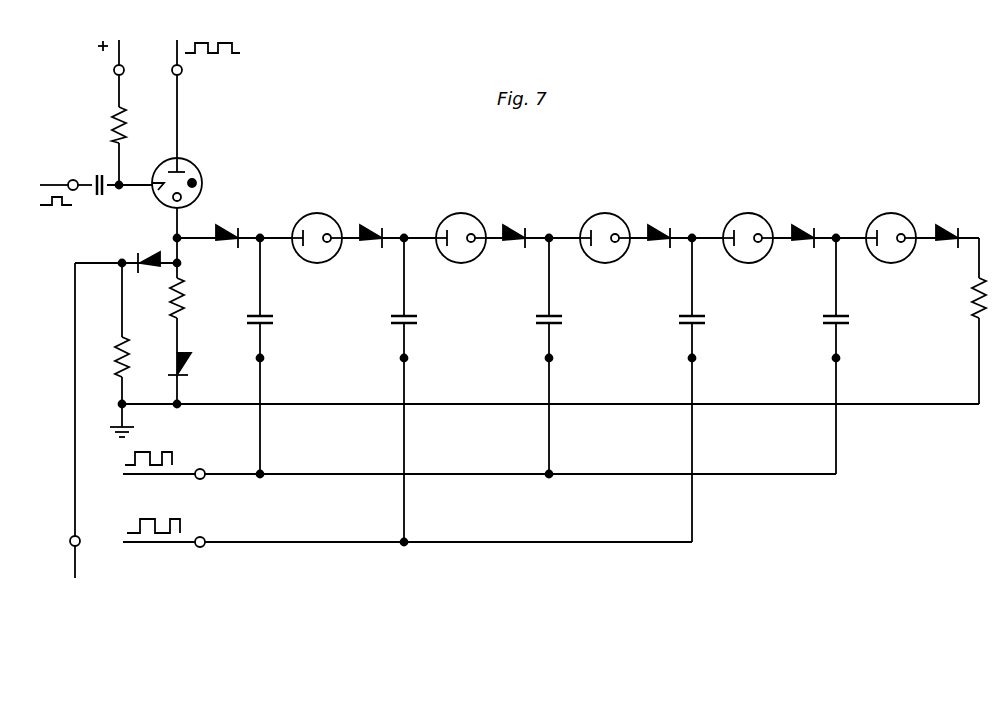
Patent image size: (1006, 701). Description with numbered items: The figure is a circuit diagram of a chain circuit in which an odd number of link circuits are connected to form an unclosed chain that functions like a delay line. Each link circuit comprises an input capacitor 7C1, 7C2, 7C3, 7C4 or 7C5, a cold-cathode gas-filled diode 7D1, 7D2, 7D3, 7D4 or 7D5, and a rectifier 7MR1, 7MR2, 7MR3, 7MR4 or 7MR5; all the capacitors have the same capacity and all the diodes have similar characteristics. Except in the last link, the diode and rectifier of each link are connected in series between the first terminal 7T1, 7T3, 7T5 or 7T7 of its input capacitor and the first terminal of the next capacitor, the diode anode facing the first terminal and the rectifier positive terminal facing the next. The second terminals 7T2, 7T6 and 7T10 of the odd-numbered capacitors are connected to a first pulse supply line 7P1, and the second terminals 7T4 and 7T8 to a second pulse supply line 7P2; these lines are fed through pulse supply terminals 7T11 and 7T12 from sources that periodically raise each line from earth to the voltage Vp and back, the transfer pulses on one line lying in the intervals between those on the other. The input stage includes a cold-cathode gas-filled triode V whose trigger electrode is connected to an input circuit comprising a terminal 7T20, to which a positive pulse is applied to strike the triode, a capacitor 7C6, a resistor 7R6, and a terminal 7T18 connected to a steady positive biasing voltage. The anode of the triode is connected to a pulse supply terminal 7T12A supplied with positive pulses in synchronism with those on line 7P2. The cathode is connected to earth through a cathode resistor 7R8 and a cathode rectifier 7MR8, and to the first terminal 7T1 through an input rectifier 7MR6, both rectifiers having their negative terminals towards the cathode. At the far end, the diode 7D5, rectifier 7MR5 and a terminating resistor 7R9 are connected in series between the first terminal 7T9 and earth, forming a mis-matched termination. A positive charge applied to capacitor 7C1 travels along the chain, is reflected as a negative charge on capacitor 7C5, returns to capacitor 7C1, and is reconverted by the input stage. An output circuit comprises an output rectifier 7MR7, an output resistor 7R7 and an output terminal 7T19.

The terminal 7T18 is at (114, 73).
The pulse supply terminal 7T12A is at (181, 74).
The resistor 7R6 is at (98, 125).
The terminal 7T20 is at (72, 180).
The capacitor 7C6 is at (102, 199).
The cold-cathode gas-filled triode V is at (194, 166).
The input rectifier 7MR6 is at (227, 224).
The output rectifier 7MR7 is at (137, 249).
The cathode resistor 7R8 is at (200, 298).
The cathode rectifier 7MR8 is at (208, 364).
The output resistor 7R7 is at (104, 357).
The terminating resistor 7R9 is at (960, 298).
The first terminal 7T1 is at (262, 234).
The first terminal 7T3 is at (406, 234).
The first terminal 7T5 is at (551, 234).
The first terminal 7T7 is at (694, 234).
The first terminal 7T9 is at (838, 234).
The cold-cathode gas-filled diode 7D1 is at (317, 227).
The cold-cathode gas-filled diode 7D2 is at (461, 228).
The cold-cathode gas-filled diode 7D3 is at (605, 229).
The cold-cathode gas-filled diode 7D4 is at (748, 229).
The cold-cathode gas-filled diode 7D5 is at (891, 226).
The rectifier 7MR1 is at (380, 223).
The rectifier 7MR2 is at (522, 224).
The rectifier 7MR3 is at (668, 225).
The rectifier 7MR4 is at (808, 224).
The rectifier 7MR5 is at (956, 225).
The input capacitor 7C1 is at (282, 320).
The input capacitor 7C2 is at (425, 320).
The input capacitor 7C3 is at (571, 320).
The input capacitor 7C4 is at (713, 320).
The input capacitor 7C5 is at (858, 318).
The second terminal 7T2 is at (263, 360).
The second terminal 7T4 is at (407, 360).
The second terminal 7T6 is at (552, 360).
The second terminal 7T8 is at (695, 360).
The second terminal 7T10 is at (839, 360).
The first pulse supply line 7P1 is at (320, 474).
The second pulse supply line 7P2 is at (318, 542).
The pulse supply terminal 7T11 is at (203, 470).
The pulse supply terminal 7T12 is at (203, 546).
The output terminal 7T19 is at (78, 545).
The transfer pulse voltage Vp is at (140, 452).